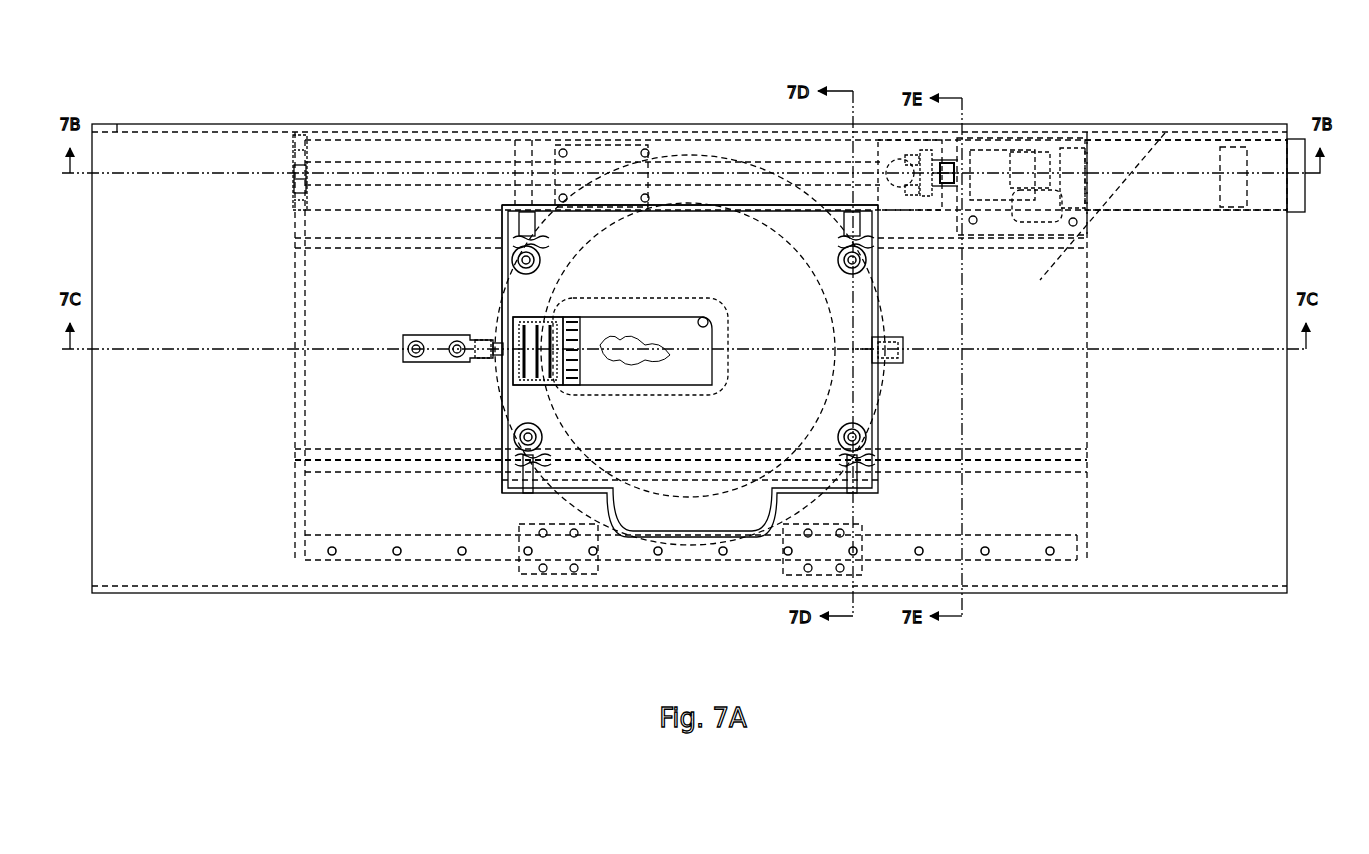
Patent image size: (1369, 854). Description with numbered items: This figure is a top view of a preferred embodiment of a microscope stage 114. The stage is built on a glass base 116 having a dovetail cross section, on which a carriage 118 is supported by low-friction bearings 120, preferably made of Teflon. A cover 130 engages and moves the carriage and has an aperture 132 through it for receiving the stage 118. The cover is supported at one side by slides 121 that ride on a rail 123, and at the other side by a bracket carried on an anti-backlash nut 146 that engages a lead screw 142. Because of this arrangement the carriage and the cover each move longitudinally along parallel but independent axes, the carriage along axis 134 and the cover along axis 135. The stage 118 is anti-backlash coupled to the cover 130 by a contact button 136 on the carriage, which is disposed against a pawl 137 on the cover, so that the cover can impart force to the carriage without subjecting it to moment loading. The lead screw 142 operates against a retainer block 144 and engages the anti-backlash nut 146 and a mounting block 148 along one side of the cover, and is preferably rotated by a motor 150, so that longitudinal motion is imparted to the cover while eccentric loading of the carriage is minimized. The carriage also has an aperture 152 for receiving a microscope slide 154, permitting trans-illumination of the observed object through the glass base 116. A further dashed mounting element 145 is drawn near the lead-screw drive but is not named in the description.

The microscope stage 114 is at (1124, 78).
The glass base 116 is at (1165, 133).
The carriage 118 is at (690, 275).
The bearings 120 is at (527, 212).
The slides 121 is at (810, 545).
The rail 123 is at (353, 565).
The cover 130 is at (267, 123).
The aperture 132 is at (768, 200).
The axis 134 is at (1248, 352).
The axis 135 is at (137, 175).
The contact button 136 is at (503, 307).
The pawl 137 is at (438, 333).
The lead screw 142 is at (790, 165).
The retainer block 144 is at (297, 132).
The mounting block 145 is at (570, 150).
The anti-backlash nut 146 is at (540, 207).
The mounting block 148 is at (935, 145).
The motor 150 is at (1118, 130).
The aperture 152 is at (697, 320).
The microscope slide 154 is at (605, 362).